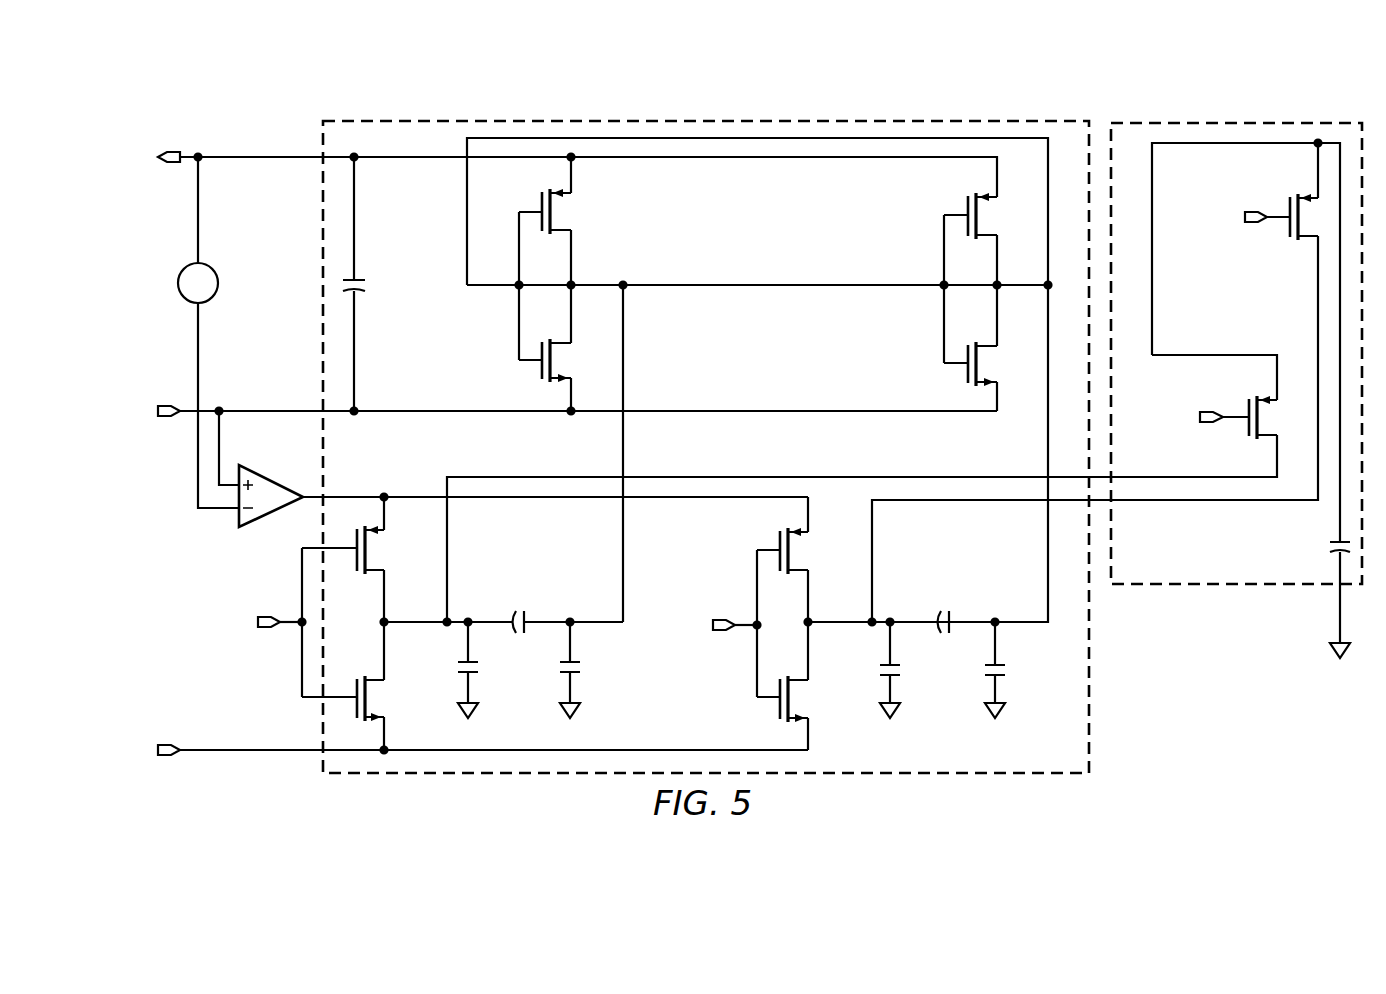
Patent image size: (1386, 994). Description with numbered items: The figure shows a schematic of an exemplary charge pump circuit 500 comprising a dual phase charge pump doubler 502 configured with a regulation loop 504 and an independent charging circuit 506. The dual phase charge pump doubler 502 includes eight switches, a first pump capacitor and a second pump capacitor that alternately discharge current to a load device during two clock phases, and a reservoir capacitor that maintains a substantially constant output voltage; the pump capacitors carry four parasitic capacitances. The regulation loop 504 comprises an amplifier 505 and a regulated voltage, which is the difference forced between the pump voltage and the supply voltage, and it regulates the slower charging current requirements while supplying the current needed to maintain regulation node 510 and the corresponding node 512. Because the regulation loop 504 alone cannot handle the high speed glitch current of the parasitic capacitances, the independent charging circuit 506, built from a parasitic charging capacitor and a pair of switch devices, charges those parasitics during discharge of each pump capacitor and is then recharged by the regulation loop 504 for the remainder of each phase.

The charge pump circuit 500 is at (916, 96).
The dual phase charge pump doubler 502 is at (1092, 720).
The regulation loop 504 is at (186, 484).
The amplifier 505 is at (268, 480).
The independent charging circuit 506 is at (1235, 590).
The regulation node 510 is at (445, 628).
The second pump node 512 is at (868, 628).